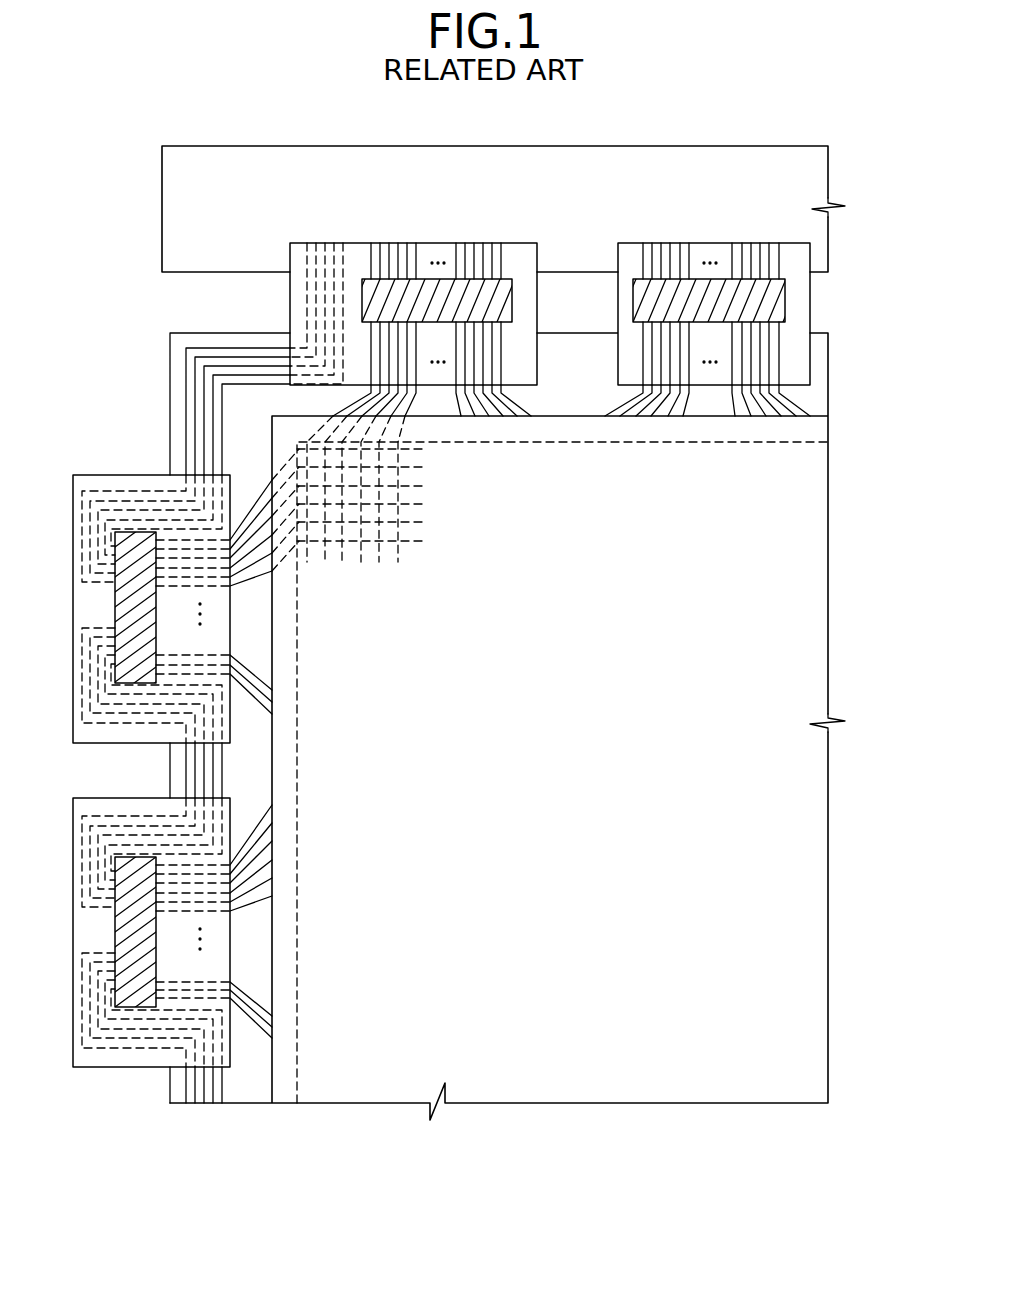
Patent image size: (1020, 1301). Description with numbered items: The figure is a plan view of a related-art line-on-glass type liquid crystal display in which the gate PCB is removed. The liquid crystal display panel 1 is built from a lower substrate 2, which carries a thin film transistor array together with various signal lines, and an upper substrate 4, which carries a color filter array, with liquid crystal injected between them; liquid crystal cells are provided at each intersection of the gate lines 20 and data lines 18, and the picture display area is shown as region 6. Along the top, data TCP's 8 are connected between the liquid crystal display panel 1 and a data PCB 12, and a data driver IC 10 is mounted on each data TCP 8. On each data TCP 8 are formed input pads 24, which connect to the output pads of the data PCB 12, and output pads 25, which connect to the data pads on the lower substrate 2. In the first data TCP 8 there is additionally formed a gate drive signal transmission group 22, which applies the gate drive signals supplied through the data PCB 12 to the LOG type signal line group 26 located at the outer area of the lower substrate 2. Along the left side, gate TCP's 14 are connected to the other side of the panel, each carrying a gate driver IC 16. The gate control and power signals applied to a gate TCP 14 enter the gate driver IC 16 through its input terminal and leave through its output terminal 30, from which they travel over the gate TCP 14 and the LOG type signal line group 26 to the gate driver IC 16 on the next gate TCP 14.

The liquid crystal display panel 1 is at (830, 607).
The lower substrate 2 is at (829, 372).
The upper substrate 4 is at (818, 436).
The display area 6 is at (627, 760).
The data TCP 8 is at (808, 326).
The data driver IC 10 is at (787, 294).
The data PCB 12 is at (823, 185).
The gate TCP 14 is at (75, 743).
The gate driver IC 16 is at (118, 530).
The data lines 18 is at (360, 552).
The gate lines 20 is at (418, 503).
The gate drive signal transmission group 22 is at (300, 290).
The input pads 24 is at (480, 250).
The output pads 25 is at (507, 366).
The LOG type signal line group 26 is at (184, 372).
The output terminal 30 is at (223, 540).